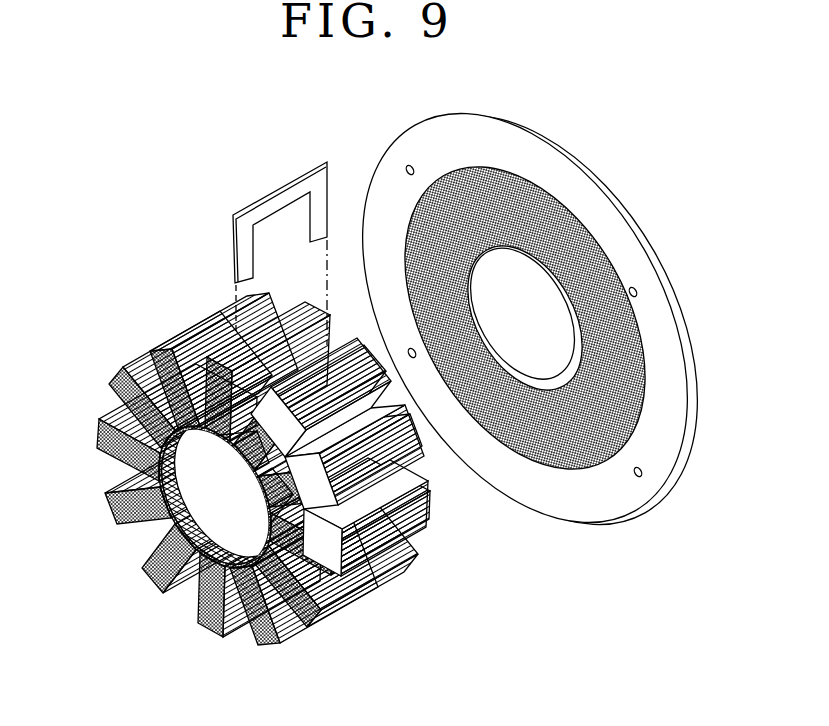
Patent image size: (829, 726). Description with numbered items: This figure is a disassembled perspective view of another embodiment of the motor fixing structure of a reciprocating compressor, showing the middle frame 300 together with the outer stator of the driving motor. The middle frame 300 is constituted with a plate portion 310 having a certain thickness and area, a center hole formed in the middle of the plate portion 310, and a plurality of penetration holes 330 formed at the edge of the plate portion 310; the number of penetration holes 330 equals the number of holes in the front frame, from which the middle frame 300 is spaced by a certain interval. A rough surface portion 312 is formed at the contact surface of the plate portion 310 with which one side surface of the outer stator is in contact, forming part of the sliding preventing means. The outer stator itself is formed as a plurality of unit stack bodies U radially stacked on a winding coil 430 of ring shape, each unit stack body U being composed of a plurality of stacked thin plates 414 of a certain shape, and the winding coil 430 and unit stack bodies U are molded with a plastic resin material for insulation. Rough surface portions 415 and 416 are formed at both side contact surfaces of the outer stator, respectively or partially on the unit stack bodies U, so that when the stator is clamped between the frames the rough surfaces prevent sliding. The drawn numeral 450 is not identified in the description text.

The middle frame 300 is at (530, 316).
The plate portion 310 is at (650, 278).
The rough surface portion 312 is at (460, 145).
The penetration holes 330 is at (407, 168).
The thin plates 414 is at (281, 174).
The rough surface portion 415 is at (266, 645).
The rough surface portion 416 is at (428, 503).
The winding coil 430 is at (367, 493).
The stator core 450 is at (277, 491).
The unit stack body u is at (112, 495).